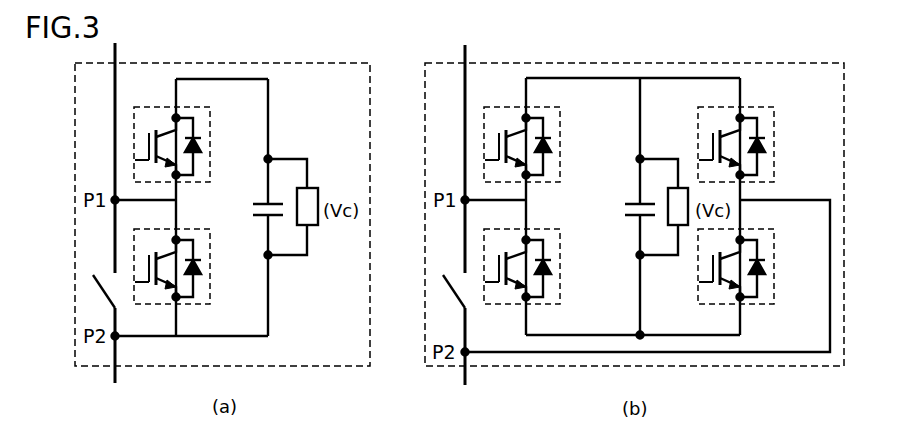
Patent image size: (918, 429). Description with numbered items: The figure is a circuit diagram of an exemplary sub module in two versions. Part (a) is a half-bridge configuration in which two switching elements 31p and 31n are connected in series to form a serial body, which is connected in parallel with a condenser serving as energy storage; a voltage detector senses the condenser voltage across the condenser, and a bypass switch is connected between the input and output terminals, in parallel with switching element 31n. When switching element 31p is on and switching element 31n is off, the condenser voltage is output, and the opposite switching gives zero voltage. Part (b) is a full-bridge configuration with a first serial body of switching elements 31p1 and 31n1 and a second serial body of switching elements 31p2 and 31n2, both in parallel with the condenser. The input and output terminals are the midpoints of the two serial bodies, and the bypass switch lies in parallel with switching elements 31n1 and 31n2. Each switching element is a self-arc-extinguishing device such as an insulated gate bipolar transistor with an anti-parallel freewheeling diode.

The switching element 31p is at (195, 108).
The switching element 31n is at (195, 230).
The switching element 31p1 is at (545, 108).
The switching element 31n1 is at (545, 230).
The switching element 31p2 is at (759, 108).
The switching element 31n2 is at (759, 230).